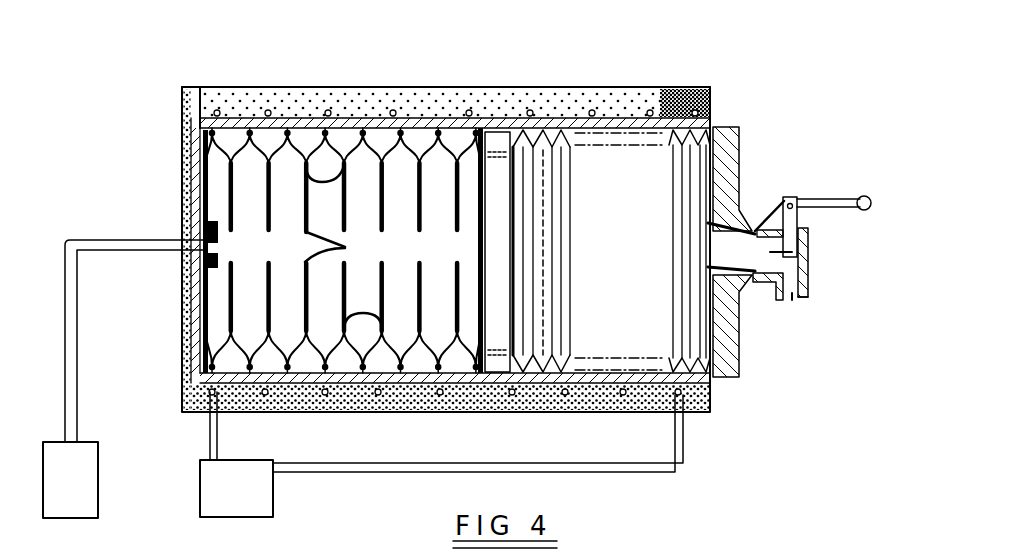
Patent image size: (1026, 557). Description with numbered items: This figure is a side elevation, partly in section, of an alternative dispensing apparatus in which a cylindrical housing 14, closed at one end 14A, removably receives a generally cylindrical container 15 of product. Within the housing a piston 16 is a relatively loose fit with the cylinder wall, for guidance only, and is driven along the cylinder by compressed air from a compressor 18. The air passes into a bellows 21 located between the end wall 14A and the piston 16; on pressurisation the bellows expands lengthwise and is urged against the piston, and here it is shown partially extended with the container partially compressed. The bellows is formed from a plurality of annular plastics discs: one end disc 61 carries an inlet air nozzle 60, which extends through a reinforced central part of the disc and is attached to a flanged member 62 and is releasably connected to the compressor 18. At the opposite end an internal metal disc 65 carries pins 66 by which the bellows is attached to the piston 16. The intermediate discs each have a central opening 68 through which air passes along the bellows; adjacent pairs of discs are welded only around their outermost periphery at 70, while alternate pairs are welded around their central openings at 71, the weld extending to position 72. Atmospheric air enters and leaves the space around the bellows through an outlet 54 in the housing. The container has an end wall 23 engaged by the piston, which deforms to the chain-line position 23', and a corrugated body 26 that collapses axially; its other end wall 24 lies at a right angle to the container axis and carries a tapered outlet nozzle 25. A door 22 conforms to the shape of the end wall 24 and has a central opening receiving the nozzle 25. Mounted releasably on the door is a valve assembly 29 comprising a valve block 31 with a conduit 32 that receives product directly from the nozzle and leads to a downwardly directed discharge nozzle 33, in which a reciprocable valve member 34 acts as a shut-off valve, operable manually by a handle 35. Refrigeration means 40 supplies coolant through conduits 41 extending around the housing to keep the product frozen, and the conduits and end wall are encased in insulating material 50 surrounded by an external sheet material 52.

The cylindrical housing 14 is at (377, 121).
The closed end of housing 14A is at (196, 147).
The container 15 is at (575, 157).
The piston 16 is at (490, 128).
The compressor 18 is at (80, 453).
The bellows 21 is at (270, 137).
The door 22 is at (735, 150).
The end wall of container 23 is at (581, 300).
The deformed end wall position 23' is at (591, 283).
The container end wall 24 is at (723, 127).
The outlet nozzle 25 is at (737, 255).
The container body 26 is at (527, 126).
The valve assembly 29 is at (810, 298).
The valve block 31 is at (769, 300).
The conduit 32 is at (808, 267).
The discharge nozzle 33 is at (792, 300).
The valve member 34 is at (807, 218).
The handle 35 is at (832, 197).
The refrigeration means 40 is at (267, 495).
The conduits 41 is at (594, 112).
The insulating material 50 is at (640, 100).
The external sheet material 52 is at (700, 92).
The outlet 54 is at (183, 89).
The inlet air nozzle 60 is at (188, 232).
The end disc 61 is at (208, 186).
The flanged member 62 is at (217, 262).
The metal disc 65 is at (480, 216).
The pins 66 is at (507, 157).
The central opening 68 is at (252, 248).
The peripheral weld 70 is at (362, 130).
The central weld 71 is at (345, 248).
The weld end position 72 is at (346, 247).